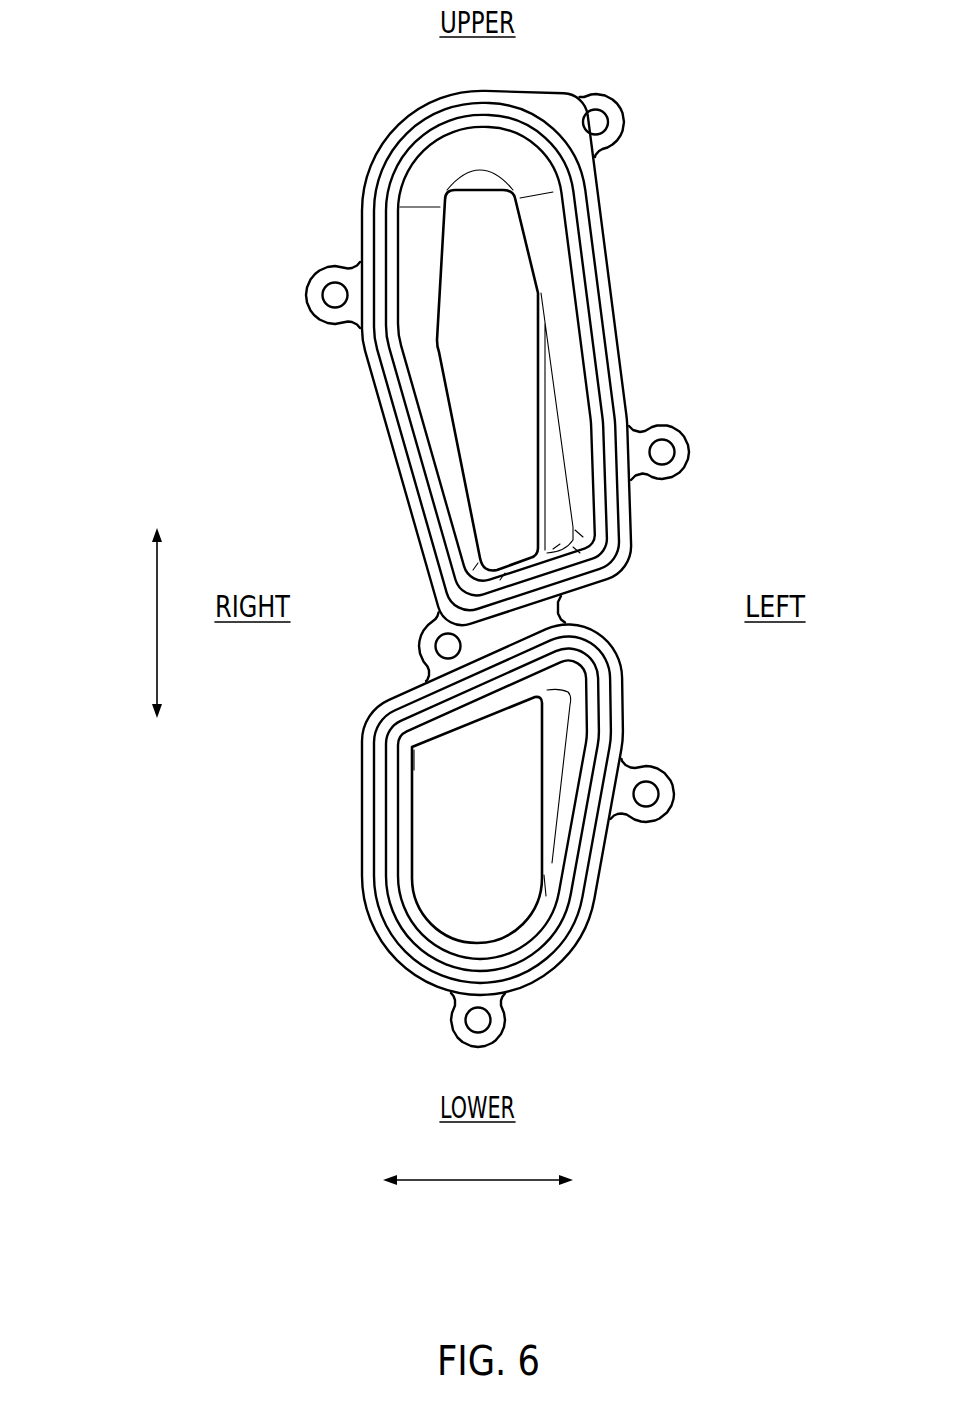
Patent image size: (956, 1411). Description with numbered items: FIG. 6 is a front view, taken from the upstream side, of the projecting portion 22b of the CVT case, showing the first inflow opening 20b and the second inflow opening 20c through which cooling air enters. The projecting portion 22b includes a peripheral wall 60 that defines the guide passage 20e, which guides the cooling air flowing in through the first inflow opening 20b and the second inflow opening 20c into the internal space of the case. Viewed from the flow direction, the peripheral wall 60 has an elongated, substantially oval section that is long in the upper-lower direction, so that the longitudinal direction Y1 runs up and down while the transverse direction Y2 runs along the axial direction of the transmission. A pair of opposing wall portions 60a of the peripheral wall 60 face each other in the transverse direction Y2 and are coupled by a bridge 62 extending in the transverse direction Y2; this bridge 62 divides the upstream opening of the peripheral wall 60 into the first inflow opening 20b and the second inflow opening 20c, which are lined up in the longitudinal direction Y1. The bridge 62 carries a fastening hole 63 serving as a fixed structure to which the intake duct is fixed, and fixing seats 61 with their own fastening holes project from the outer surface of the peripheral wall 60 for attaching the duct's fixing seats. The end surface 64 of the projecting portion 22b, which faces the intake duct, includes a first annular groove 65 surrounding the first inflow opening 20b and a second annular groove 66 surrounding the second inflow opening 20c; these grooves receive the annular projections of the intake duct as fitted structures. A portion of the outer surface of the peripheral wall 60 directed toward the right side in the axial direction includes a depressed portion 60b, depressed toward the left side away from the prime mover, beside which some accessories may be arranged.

The peripheral wall 60 is at (604, 214).
The opposing wall portions 60a is at (618, 338).
The depressed portion 60b is at (434, 600).
The fixing seats 61 is at (624, 119).
The bridge 62 is at (537, 624).
The fastening hole 63 is at (436, 646).
The end surface 64 is at (364, 258).
The first annular groove 65 is at (376, 818).
The second annular groove 66 is at (384, 360).
The projecting portion 22b is at (622, 288).
The second inflow opening 20c is at (522, 401).
The guide passage 20e is at (522, 503).
The first inflow opening 20b is at (520, 870).
The longitudinal direction Y1 is at (156, 620).
The transverse direction Y2 is at (478, 1181).